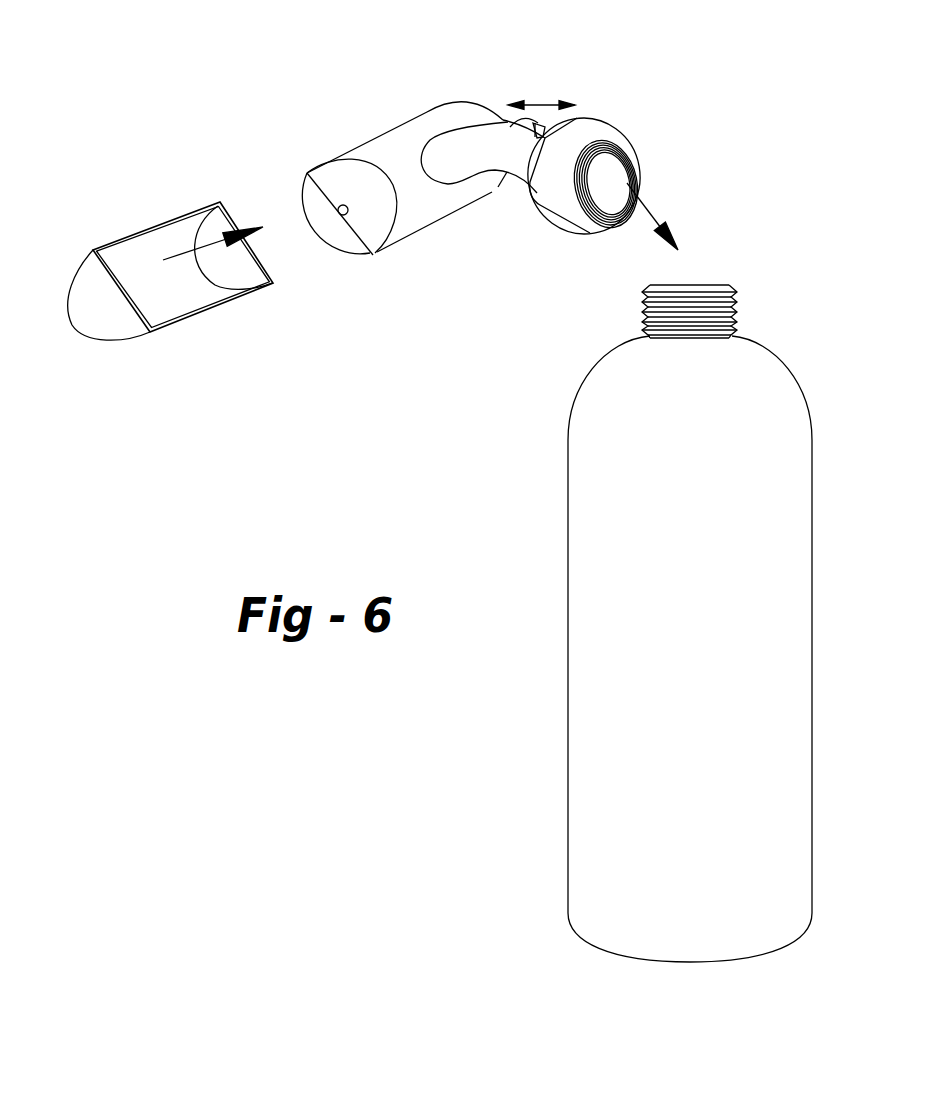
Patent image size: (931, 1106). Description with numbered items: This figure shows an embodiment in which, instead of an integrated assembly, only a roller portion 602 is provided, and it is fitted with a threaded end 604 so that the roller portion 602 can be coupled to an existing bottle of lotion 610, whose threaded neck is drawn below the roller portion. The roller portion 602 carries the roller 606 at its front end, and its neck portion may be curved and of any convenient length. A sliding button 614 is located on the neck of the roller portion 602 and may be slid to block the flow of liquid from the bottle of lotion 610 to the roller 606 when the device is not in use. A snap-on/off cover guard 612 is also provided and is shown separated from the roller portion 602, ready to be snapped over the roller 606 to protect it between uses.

The roller portion 602 is at (352, 100).
The threaded end 604 is at (587, 142).
The roller 606 is at (308, 210).
The bottle of lotion 610 is at (690, 623).
The snap-on/off cover guard 612 is at (150, 242).
The sliding button 614 is at (536, 118).